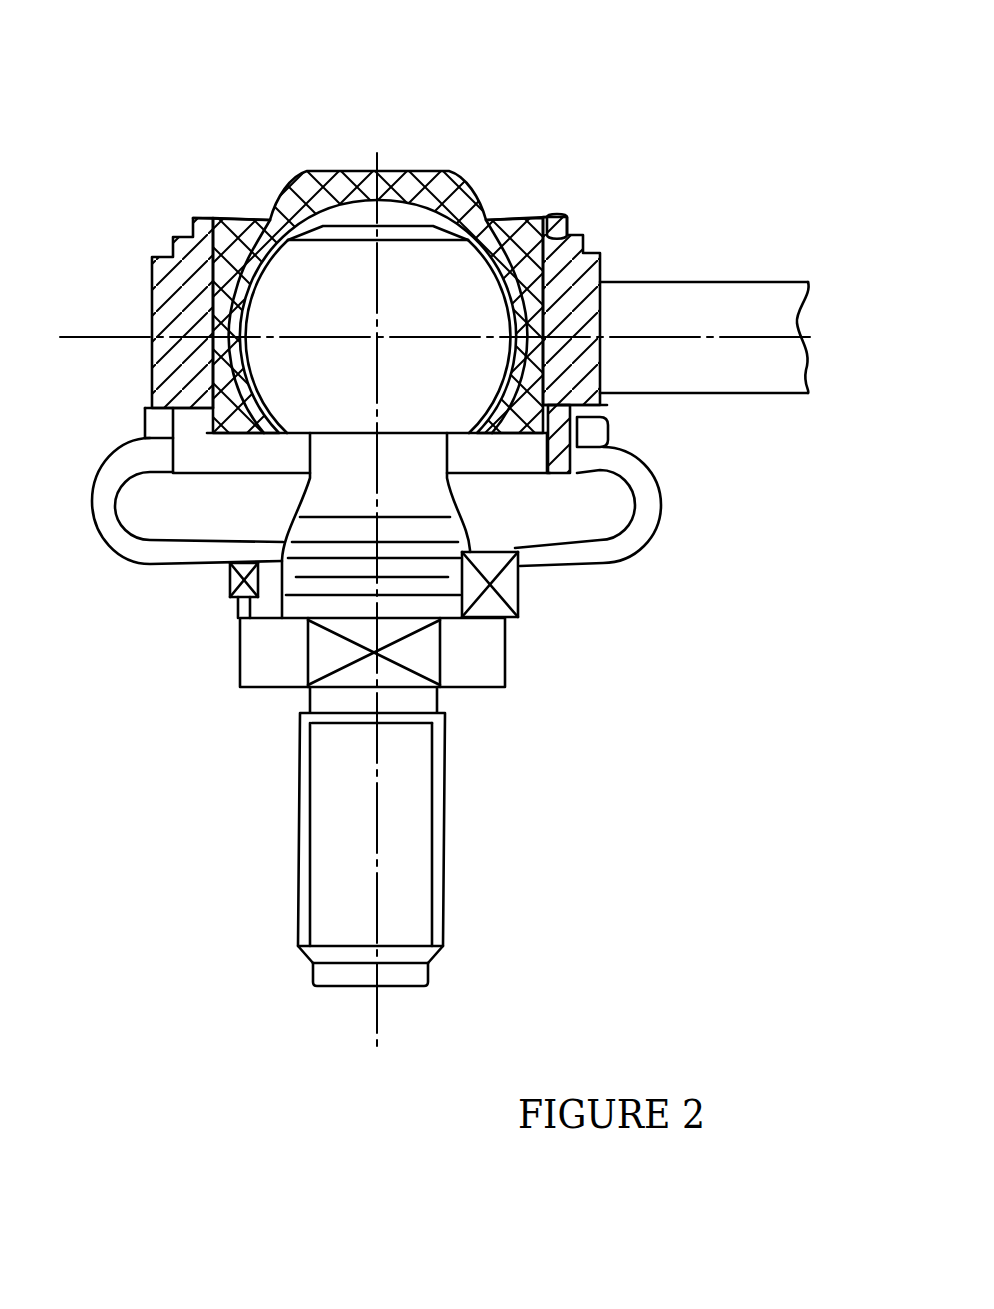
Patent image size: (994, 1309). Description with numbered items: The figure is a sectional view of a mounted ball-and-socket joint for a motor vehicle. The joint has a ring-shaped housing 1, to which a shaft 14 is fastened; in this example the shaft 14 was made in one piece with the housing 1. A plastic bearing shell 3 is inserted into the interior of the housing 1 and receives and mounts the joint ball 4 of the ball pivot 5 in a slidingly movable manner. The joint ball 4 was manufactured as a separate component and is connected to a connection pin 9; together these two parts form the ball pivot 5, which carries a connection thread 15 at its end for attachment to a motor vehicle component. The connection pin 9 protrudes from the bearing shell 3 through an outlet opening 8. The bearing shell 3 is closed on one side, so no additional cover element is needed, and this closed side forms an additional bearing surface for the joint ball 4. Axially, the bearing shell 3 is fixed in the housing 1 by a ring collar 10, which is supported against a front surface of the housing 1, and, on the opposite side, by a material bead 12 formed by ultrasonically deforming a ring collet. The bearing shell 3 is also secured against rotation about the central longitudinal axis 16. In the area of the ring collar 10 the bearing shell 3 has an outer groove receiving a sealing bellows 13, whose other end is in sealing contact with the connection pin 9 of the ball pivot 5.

The housing 1 is at (580, 273).
The bearing shell 3 is at (172, 243).
The joint ball 4 is at (445, 298).
The ball pivot 5 is at (297, 1000).
The outlet opening 8 is at (518, 457).
The connection pin 9 is at (343, 480).
The ring collar 10 is at (547, 430).
The material bead 12 is at (547, 218).
The sealing bellows 13 is at (645, 517).
The shaft 14 is at (735, 307).
The connection thread 15 is at (407, 798).
The central longitudinal axis 16 is at (377, 153).